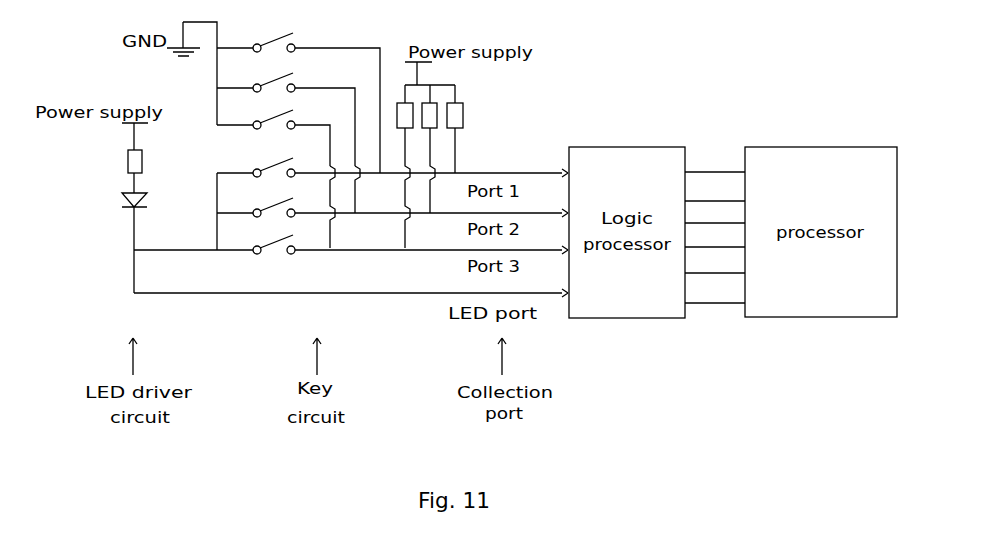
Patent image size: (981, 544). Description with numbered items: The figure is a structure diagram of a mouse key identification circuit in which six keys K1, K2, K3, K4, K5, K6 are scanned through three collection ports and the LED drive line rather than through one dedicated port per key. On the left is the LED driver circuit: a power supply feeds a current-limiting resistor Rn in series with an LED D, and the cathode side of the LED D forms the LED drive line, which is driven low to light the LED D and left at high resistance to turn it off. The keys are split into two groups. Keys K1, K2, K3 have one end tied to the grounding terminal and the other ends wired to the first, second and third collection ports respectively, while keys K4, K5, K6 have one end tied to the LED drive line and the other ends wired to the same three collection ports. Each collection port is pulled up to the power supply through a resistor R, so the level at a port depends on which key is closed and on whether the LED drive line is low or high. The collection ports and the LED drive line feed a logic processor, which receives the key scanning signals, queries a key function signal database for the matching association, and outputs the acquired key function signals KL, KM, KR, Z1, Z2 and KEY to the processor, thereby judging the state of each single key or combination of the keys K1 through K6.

The key K1 is at (274, 40).
The key K2 is at (274, 79).
The key K3 is at (274, 116).
The key K4 is at (274, 160).
The key K5 is at (274, 202).
The key K6 is at (274, 240).
The current-limiting resistor Rn is at (114, 161).
The LED D is at (118, 202).
The resistor R is at (433, 175).
The KL port KL is at (715, 162).
The KM port KM is at (715, 193).
The KR port KR is at (715, 216).
The Z1 port Z1 is at (715, 239).
The Z2 port Z2 is at (715, 266).
The KEY signal KEY is at (715, 294).